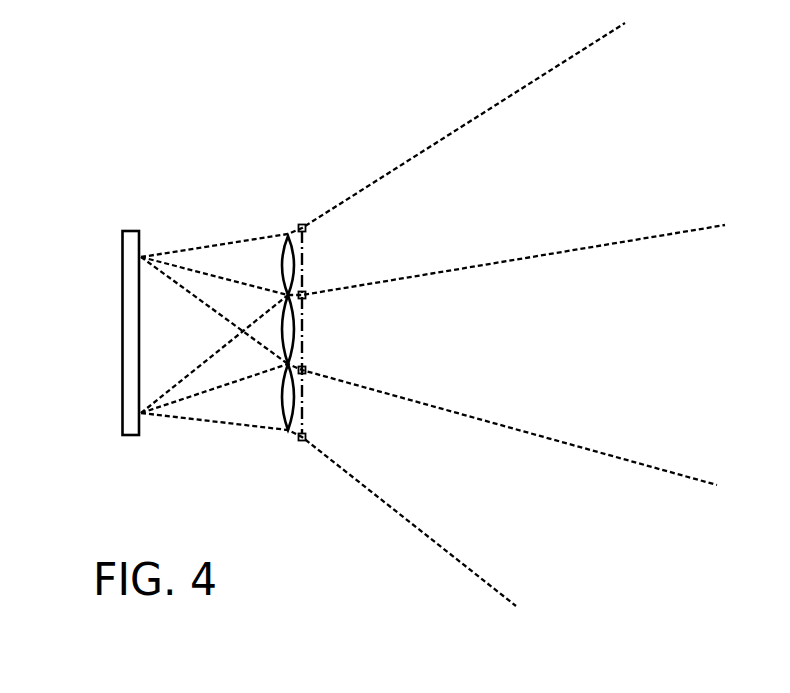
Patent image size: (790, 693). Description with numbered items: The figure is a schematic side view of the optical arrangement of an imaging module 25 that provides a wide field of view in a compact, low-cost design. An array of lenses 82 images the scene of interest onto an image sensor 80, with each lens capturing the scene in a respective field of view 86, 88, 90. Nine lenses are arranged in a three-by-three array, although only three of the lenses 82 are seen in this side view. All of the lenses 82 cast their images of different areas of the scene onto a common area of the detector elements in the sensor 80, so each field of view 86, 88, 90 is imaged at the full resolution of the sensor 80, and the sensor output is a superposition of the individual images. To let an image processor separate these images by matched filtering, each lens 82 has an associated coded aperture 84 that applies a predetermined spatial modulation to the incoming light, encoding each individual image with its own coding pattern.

The imaging module 25 is at (113, 95).
The image sensor 80 is at (121, 252).
The lenses 82 is at (283, 257).
The coded aperture 84 is at (302, 263).
The field of view 86 is at (700, 158).
The field of view 88 is at (700, 364).
The field of view 90 is at (700, 588).